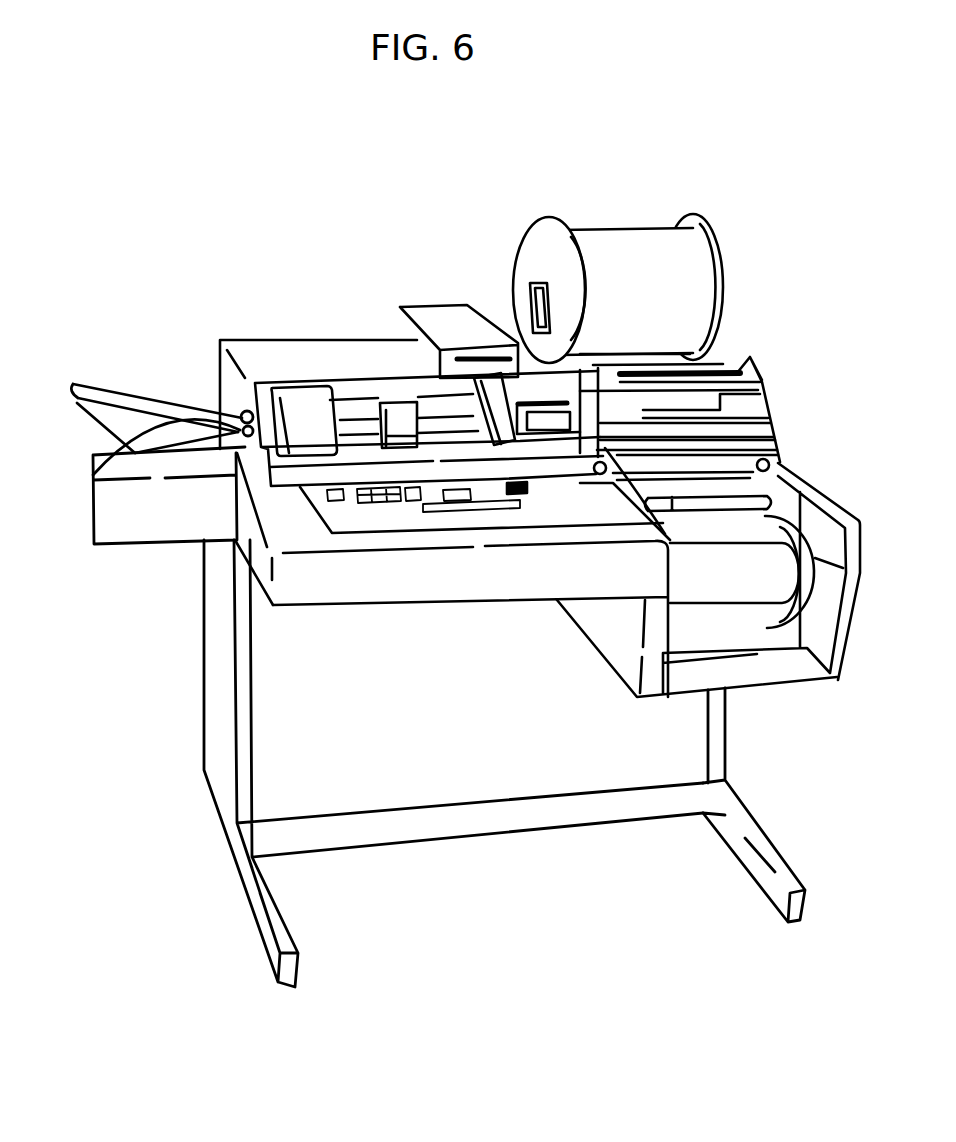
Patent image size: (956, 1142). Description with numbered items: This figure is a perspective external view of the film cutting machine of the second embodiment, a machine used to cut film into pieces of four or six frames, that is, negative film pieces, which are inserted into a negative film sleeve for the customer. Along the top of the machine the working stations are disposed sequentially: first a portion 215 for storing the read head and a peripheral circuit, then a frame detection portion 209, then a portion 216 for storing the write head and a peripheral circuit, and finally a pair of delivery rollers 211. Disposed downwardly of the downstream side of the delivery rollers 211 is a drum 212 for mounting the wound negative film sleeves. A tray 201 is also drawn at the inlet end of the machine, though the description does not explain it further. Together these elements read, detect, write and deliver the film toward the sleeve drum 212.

The paper tray 201 is at (125, 383).
The frame detection portion 209 is at (400, 406).
The delivery rollers 211 is at (568, 432).
The drum 212 is at (751, 622).
The portion for storing the read head and a peripheral circuit 215 is at (299, 402).
The portion for storing the write head and a peripheral circuit 216 is at (507, 428).